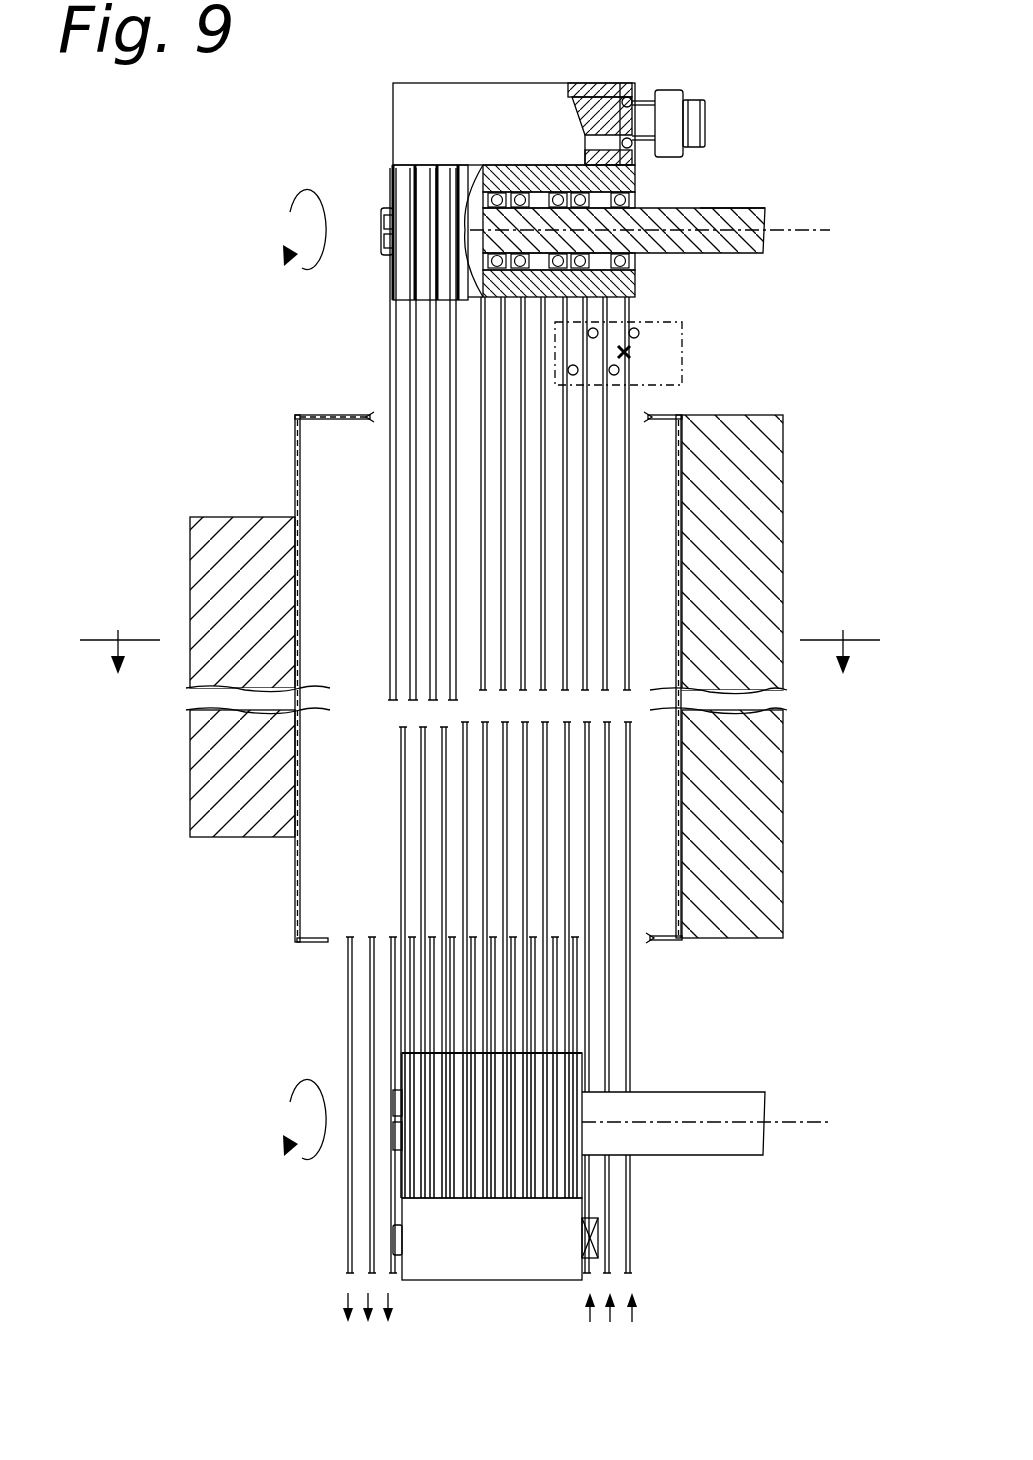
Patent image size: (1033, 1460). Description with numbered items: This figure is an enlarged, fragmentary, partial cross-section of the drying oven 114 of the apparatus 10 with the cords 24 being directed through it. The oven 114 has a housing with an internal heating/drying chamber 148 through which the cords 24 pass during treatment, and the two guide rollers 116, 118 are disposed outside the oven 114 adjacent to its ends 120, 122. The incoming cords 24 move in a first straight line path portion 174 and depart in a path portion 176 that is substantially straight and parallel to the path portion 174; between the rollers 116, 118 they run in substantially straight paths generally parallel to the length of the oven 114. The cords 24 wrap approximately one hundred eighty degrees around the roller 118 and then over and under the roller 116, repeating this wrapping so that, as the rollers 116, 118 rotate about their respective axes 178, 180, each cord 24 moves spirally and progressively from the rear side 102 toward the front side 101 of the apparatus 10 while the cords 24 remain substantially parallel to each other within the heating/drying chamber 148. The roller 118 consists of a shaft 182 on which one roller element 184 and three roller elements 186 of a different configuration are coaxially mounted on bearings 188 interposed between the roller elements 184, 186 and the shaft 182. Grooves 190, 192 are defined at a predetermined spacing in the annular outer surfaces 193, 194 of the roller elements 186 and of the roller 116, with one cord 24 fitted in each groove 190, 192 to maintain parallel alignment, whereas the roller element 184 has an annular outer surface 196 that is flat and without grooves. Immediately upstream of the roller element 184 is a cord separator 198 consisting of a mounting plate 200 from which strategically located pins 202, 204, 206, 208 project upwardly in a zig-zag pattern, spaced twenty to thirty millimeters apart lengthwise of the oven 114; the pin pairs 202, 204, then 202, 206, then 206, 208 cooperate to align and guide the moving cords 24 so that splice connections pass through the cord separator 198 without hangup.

The drying oven 114 is at (690, 40).
The annular outer surface 196 is at (640, 92).
The guide roller 118 is at (413, 165).
The roller elements 186 is at (532, 166).
The bearings 188 is at (608, 186).
The roller element 184 is at (608, 280).
The axis 180 is at (783, 233).
The shaft 182 is at (760, 178).
The grooves 190 is at (636, 493).
The cord separator 198 is at (671, 353).
The pin 206 is at (589, 336).
The pin 204 is at (687, 358).
The pin 208 is at (569, 373).
The pin 202 is at (738, 471).
The mounting plate 200 is at (753, 442).
The annular outer surface 193 is at (527, 305).
The front side 101 is at (147, 778).
The rear side 102 is at (862, 773).
The end 122 is at (714, 400).
The apparatus 10 is at (480, 668).
The heating/drying chamber 148 is at (664, 624).
The cords 24 is at (440, 820).
The path portion 176 is at (300, 1224).
The end 120 is at (613, 995).
The guide roller 116 is at (569, 1148).
The grooves 192 is at (568, 1072).
The annular outer surface 194 is at (495, 1263).
The axis 178 is at (795, 1140).
The path portion 174 is at (716, 1189).